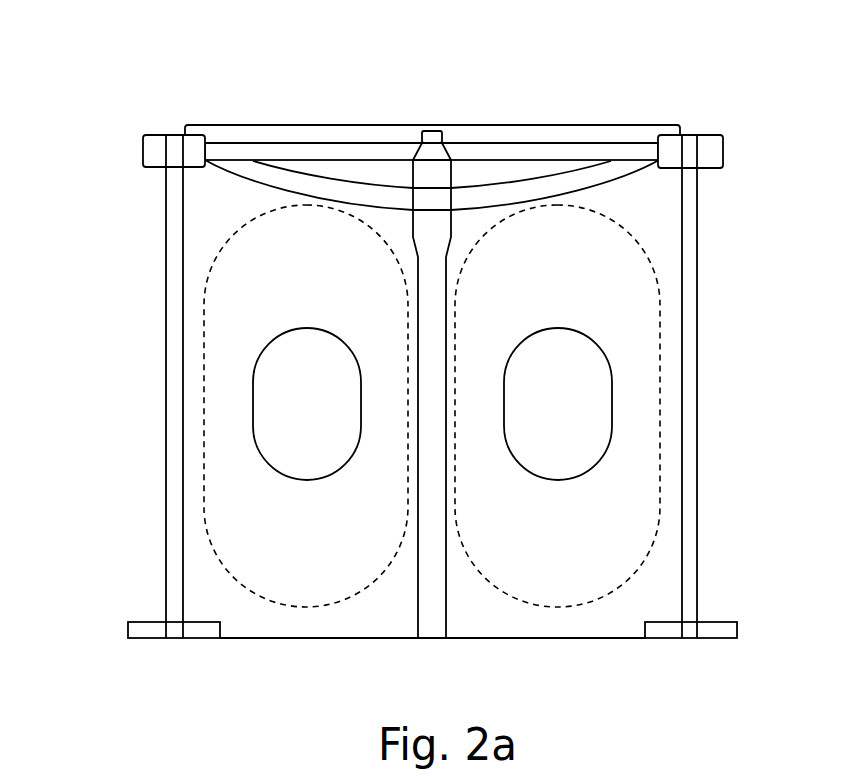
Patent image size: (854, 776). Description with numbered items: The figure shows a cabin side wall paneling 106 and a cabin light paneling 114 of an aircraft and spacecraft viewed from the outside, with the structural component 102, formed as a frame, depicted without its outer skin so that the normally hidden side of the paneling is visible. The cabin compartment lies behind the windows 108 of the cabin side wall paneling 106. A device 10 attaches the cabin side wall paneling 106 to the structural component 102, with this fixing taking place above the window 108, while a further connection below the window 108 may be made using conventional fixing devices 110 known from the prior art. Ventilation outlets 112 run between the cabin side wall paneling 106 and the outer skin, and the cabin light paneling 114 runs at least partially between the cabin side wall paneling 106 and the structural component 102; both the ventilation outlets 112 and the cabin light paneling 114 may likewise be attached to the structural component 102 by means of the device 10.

The device for fixing cabin side wall paneling and cabin light paneling to a structu 10 is at (156, 162).
The structural component 102 is at (177, 258).
The cabin side wall paneling 106 is at (650, 200).
The window 108 is at (290, 408).
The conventional fixing device 110 is at (145, 630).
The ventilation outlet 112 is at (246, 165).
The cabin light paneling 114 is at (628, 135).